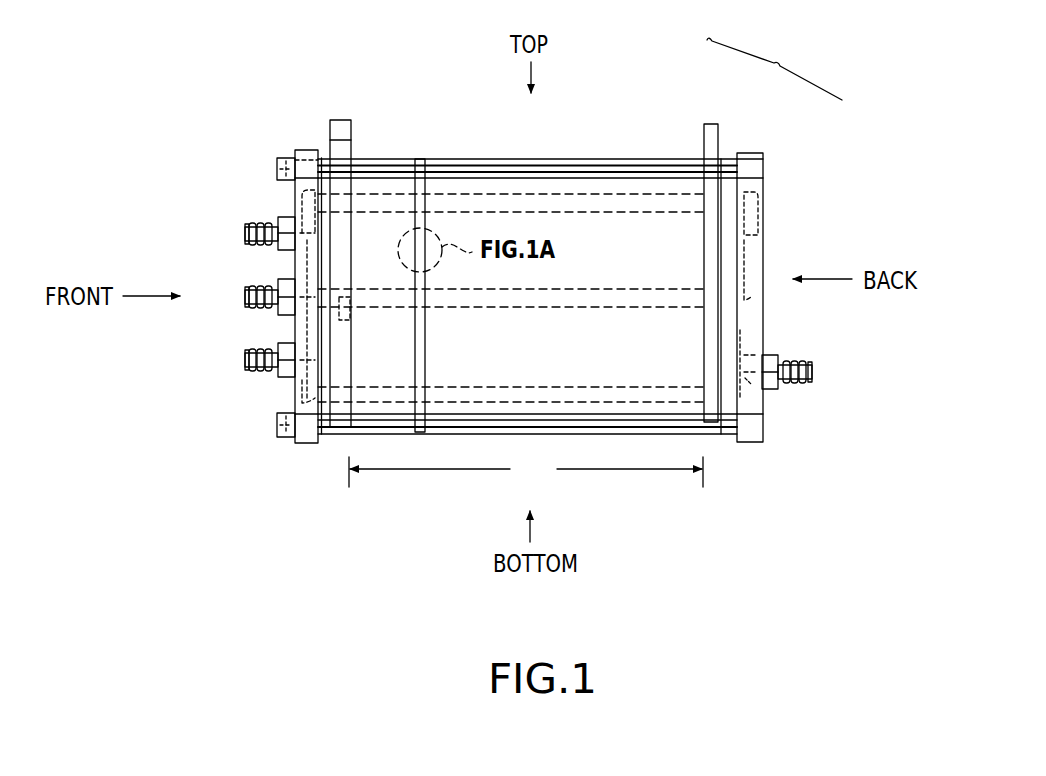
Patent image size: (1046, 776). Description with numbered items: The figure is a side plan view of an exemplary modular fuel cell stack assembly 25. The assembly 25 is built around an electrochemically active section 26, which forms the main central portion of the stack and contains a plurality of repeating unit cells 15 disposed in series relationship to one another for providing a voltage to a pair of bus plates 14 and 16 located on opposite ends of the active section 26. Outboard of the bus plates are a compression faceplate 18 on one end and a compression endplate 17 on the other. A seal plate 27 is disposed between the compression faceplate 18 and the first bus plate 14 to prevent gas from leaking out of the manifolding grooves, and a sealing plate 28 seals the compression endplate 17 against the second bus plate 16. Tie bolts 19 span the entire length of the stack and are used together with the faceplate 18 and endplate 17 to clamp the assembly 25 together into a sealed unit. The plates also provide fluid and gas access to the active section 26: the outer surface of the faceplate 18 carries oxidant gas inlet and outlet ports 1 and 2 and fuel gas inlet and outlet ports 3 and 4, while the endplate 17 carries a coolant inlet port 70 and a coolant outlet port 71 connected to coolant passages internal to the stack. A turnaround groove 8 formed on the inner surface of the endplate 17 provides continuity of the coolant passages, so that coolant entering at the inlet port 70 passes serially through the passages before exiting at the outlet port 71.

The oxidant gas inlet port 1 is at (278, 370).
The oxidant gas outlet port 2 is at (267, 217).
The fuel gas inlet port 3 is at (226, 318).
The fuel gas outlet port 4 is at (247, 297).
The turnaround groove 8 is at (748, 385).
The first bus plate 14 is at (342, 120).
The unit cells 15 is at (420, 159).
The second bus plate 16 is at (710, 123).
The compression endplate 17 is at (763, 153).
The compression faceplate 18 is at (304, 150).
The tie bolts 19 is at (277, 165).
The fuel cell stack assembly 25 is at (774, 69).
The electrochemically active section 26 is at (526, 472).
The seal plate 27 is at (323, 152).
The sealing plate 28 is at (727, 158).
The coolant inlet port 70 is at (827, 363).
The coolant outlet port 71 is at (812, 362).